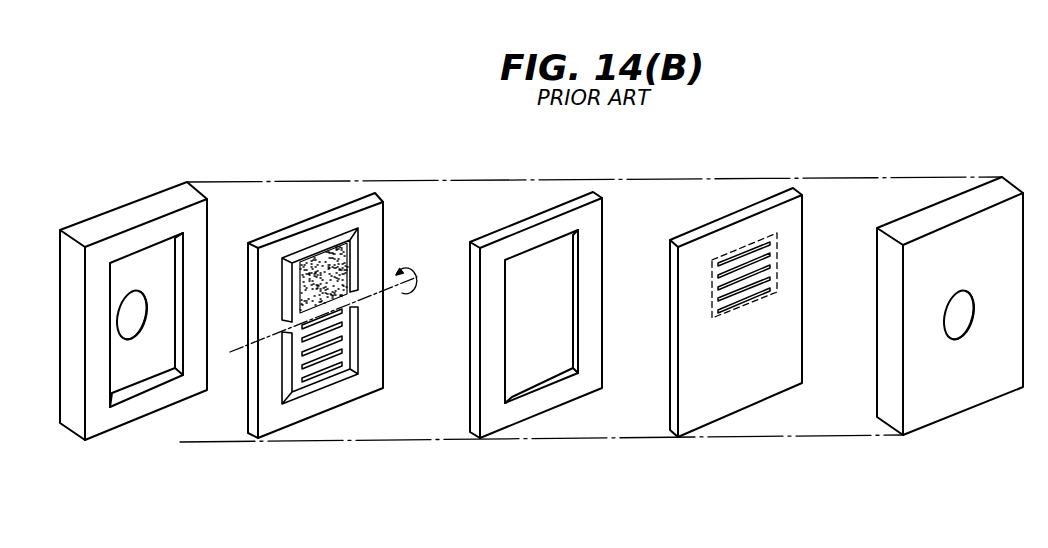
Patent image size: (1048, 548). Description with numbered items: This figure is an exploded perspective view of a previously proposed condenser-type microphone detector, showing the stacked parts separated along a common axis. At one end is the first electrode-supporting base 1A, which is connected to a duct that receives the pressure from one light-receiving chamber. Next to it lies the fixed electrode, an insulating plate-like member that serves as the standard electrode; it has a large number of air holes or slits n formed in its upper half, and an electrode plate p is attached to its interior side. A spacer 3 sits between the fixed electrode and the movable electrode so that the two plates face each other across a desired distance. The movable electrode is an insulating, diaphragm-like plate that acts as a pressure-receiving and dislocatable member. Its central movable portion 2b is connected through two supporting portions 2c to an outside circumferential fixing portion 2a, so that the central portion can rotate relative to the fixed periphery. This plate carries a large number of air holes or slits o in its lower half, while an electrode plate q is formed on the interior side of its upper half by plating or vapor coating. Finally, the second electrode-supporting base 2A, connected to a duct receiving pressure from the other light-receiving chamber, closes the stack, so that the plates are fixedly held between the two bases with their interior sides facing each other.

The second electrode-supporting base 2A is at (165, 410).
The outside circumferential fixing portion 2a is at (297, 243).
The central movable portion 2b is at (348, 265).
The electrode plate q is at (305, 287).
The air holes or slits o is at (330, 353).
The supporting portions 2c is at (358, 300).
The spacer 3 is at (550, 408).
The air holes or slits n is at (768, 266).
The electrode plate p is at (775, 295).
The first electrode-supporting base 1A is at (977, 405).